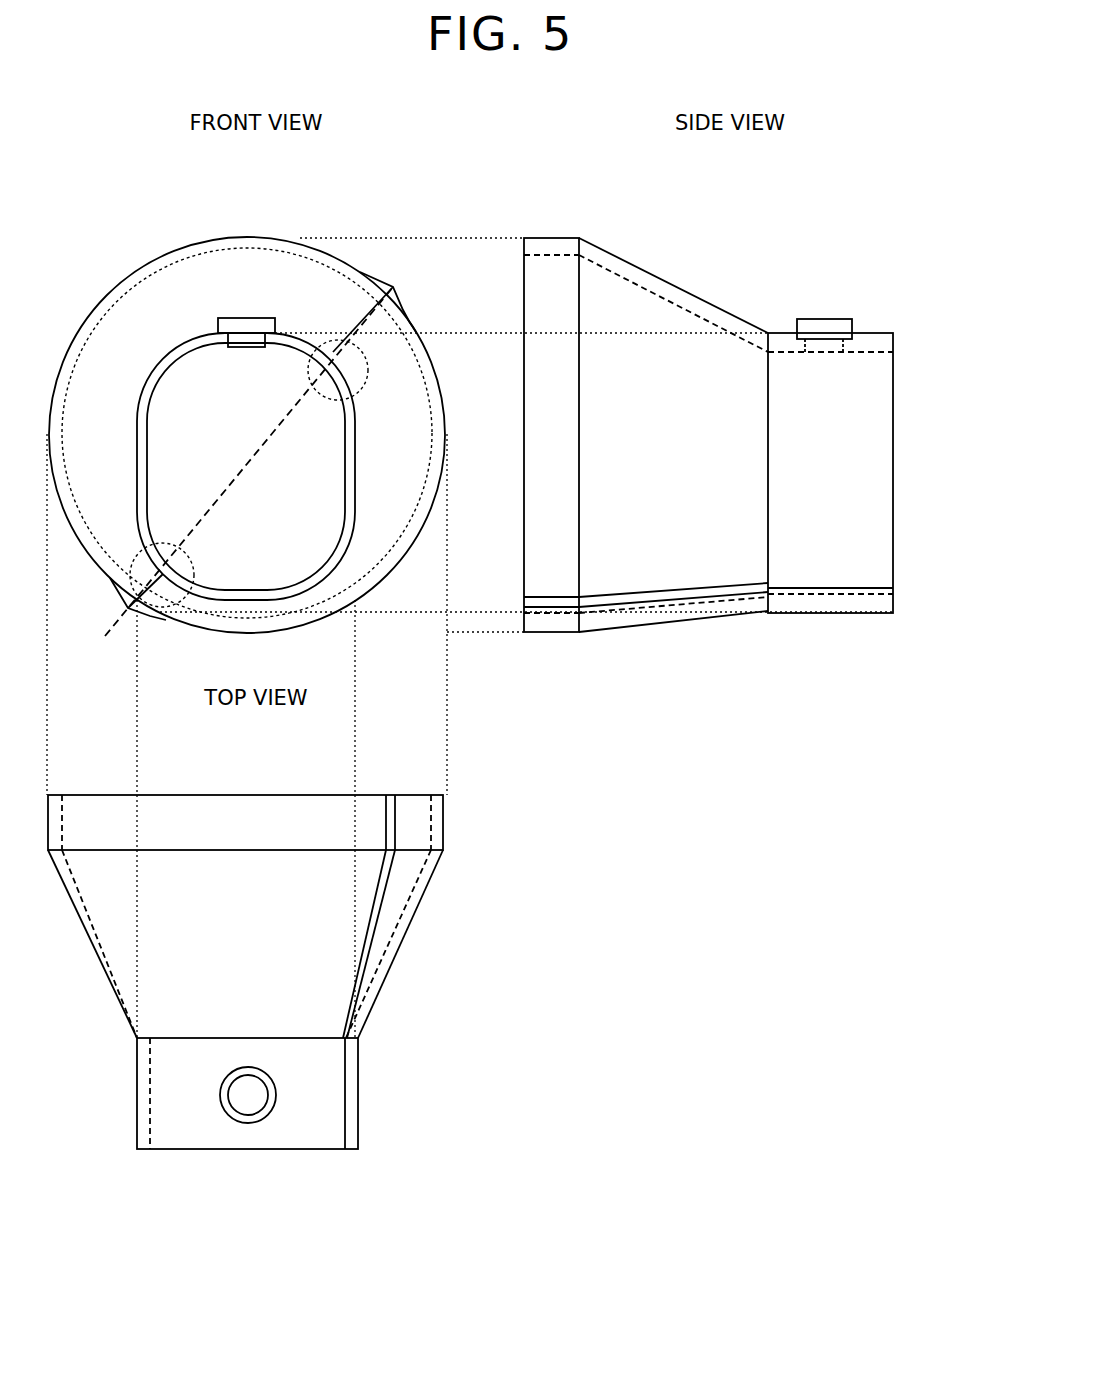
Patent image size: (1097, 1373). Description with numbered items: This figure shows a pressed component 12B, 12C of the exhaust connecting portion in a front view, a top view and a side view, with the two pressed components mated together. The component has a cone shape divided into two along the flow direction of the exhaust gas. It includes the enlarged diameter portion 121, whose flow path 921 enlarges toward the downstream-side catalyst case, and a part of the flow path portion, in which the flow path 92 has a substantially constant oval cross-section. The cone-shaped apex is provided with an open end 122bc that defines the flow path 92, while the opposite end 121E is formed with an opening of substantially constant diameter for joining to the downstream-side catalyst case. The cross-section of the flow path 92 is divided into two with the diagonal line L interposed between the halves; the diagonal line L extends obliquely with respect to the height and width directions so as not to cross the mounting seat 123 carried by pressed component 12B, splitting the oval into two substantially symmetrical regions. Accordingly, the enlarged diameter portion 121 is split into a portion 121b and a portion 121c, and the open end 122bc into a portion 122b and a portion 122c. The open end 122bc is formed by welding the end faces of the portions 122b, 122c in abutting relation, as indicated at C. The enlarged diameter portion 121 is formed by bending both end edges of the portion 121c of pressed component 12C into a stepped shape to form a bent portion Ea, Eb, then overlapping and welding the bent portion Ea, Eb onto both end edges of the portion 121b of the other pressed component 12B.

The pressed component 12B is at (175, 235).
The flow path 92 is at (262, 483).
The portion 122b is at (147, 372).
The mounting seat 123 is at (323, 292).
The portion 121b is at (250, 318).
The end 121E is at (545, 237).
The flow path 921 is at (680, 483).
The enlarged diameter portion 121 is at (378, 292).
The portion 121c is at (383, 405).
The open end 122bc is at (363, 453).
The portion 122c is at (355, 575).
The pressed component 12C is at (410, 556).
The bent portion Eb is at (398, 306).
The bent portion Ea is at (128, 612).
The weld location C is at (395, 330).
The diagonal line L is at (240, 479).